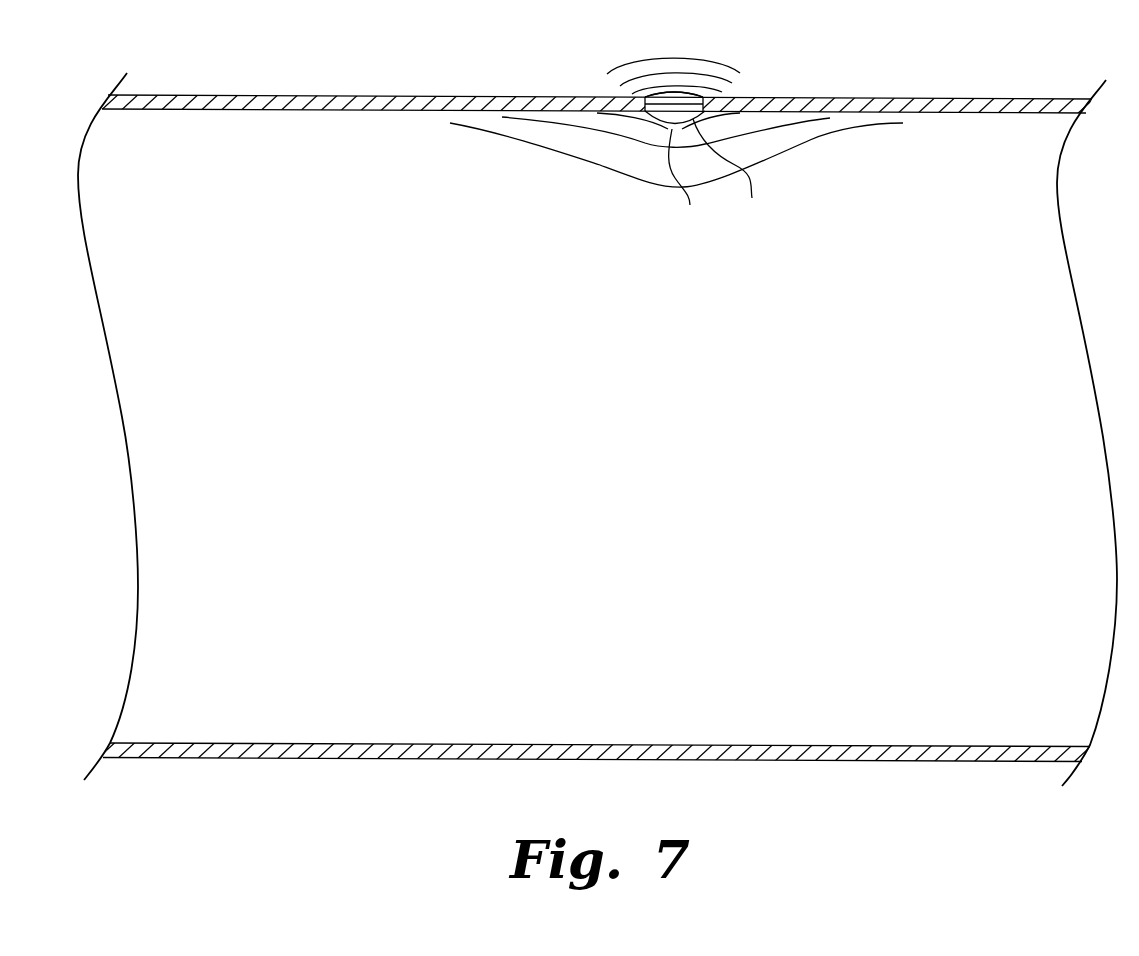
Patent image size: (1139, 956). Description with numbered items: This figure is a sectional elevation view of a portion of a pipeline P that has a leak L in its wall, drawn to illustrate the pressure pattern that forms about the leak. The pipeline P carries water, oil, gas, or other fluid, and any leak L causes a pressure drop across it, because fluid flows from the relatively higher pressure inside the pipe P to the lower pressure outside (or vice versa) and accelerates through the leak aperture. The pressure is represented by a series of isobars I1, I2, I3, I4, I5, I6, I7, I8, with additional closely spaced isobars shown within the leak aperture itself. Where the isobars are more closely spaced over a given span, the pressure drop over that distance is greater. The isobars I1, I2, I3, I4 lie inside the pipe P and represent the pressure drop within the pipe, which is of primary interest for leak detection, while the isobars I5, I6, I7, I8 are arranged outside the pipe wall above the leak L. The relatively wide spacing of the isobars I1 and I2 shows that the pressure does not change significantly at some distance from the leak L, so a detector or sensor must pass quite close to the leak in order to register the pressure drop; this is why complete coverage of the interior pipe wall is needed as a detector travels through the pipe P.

The pipeline P is at (318, 758).
The leak L is at (652, 78).
The isobar I1 is at (573, 160).
The isobar I2 is at (643, 140).
The isobar I3 is at (690, 205).
The isobar I4 is at (730, 173).
The isobar I5 is at (683, 96).
The isobar I6 is at (705, 88).
The isobar I7 is at (713, 80).
The isobar I8 is at (736, 70).